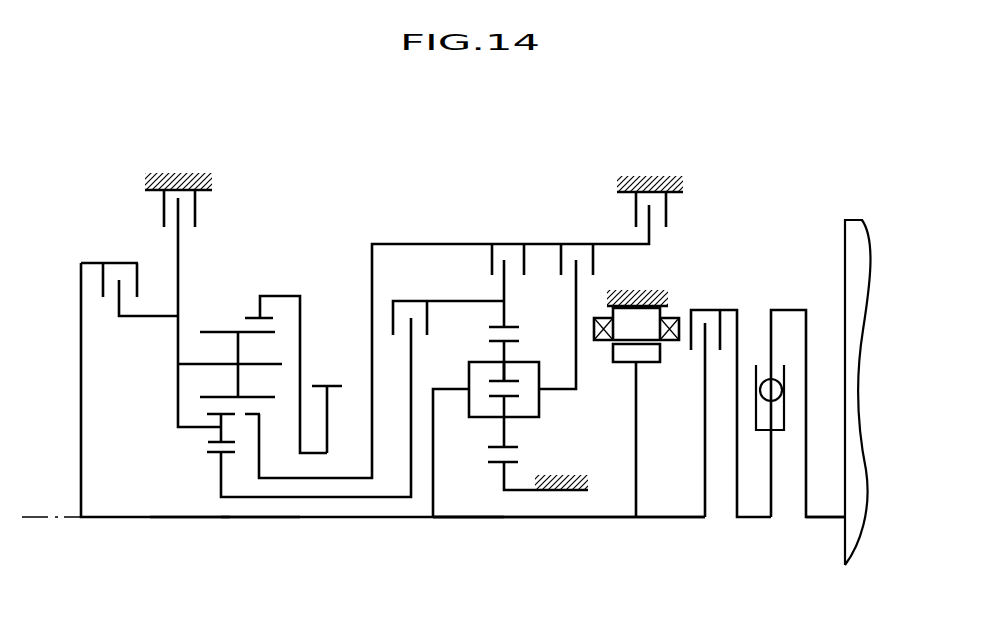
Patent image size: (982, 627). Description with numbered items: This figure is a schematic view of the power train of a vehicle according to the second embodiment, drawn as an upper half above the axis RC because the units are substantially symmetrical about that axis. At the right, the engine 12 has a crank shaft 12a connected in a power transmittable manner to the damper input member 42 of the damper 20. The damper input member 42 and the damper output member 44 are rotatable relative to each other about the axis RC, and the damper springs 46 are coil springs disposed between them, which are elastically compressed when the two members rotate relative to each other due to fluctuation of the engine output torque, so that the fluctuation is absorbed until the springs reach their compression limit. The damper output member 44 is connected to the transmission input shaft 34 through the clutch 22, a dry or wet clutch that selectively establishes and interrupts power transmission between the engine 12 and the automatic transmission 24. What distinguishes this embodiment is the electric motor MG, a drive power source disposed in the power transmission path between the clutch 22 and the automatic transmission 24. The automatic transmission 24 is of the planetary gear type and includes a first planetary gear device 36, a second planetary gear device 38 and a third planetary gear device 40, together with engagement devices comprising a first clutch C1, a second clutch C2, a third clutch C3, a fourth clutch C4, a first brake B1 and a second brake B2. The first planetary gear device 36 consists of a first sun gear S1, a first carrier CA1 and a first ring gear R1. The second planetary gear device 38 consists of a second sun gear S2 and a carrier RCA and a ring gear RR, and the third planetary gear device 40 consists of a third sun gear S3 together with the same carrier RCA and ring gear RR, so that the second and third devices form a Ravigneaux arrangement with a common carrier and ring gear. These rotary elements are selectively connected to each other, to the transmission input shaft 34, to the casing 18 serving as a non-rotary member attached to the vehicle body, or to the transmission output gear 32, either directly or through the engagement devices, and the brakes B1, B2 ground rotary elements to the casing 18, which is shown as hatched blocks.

The automatic transmission 24 is at (110, 172).
The casing 18 is at (178, 178).
The second brake B2 is at (197, 308).
The first brake B1 is at (669, 209).
The first clutch C1 is at (448, 306).
The second clutch C2 is at (129, 277).
The third clutch C3 is at (508, 274).
The fourth clutch C4 is at (566, 305).
The ring gear RR is at (255, 316).
The carrier RCA is at (178, 379).
The second sun gear S2 is at (282, 406).
The third sun gear S3 is at (214, 451).
The first sun gear S1 is at (490, 460).
The first ring gear R1 is at (508, 327).
The first carrier CA1 is at (453, 388).
The transmission output gear 32 is at (333, 384).
The transmission input shaft 34 is at (597, 518).
The first planetary gear device 36 is at (486, 526).
The second planetary gear device 38 is at (270, 526).
The third planetary gear device 40 is at (211, 526).
The axis RC is at (35, 525).
The electric motor MG is at (636, 412).
The clutch 22 is at (731, 401).
The damper 20 is at (758, 338).
The damper input member 42 is at (772, 355).
The damper output member 44 is at (776, 413).
The damper springs 46 is at (774, 378).
The engine 12 is at (853, 241).
The crank shaft 12a is at (822, 520).